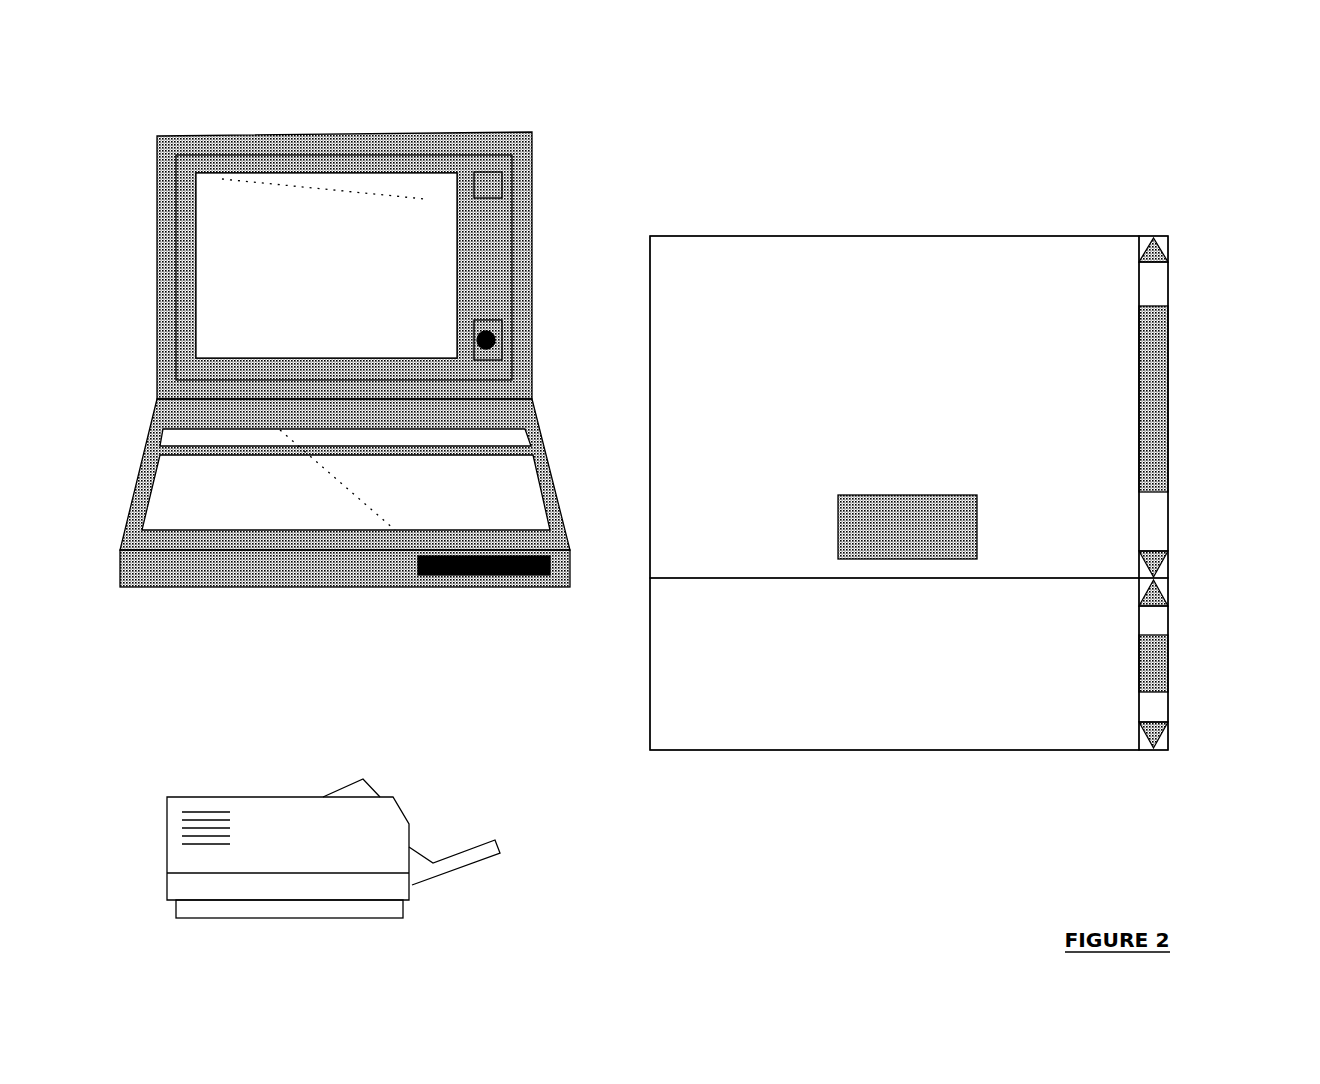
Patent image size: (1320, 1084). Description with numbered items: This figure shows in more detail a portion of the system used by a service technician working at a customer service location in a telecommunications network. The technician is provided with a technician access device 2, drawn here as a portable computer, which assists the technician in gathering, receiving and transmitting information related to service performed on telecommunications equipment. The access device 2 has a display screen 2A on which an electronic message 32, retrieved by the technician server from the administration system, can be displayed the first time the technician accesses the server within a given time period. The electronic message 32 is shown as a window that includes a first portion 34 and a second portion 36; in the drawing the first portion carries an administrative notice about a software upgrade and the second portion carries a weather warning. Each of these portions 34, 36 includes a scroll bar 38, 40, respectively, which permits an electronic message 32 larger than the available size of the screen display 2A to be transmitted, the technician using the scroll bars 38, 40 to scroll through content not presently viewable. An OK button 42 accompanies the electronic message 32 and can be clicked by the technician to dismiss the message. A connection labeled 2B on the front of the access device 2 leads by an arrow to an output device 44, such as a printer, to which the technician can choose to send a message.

The technician access device 2 is at (210, 587).
The display screen 2A is at (257, 217).
The output port of client computer 2B is at (288, 795).
The output device 44 is at (412, 825).
The electronic message 32 is at (678, 783).
The first portion 34 is at (1012, 260).
The second portion 36 is at (965, 723).
The scroll bar 38 is at (1168, 347).
The scroll bar 40 is at (1155, 668).
The OK button 42 is at (863, 522).